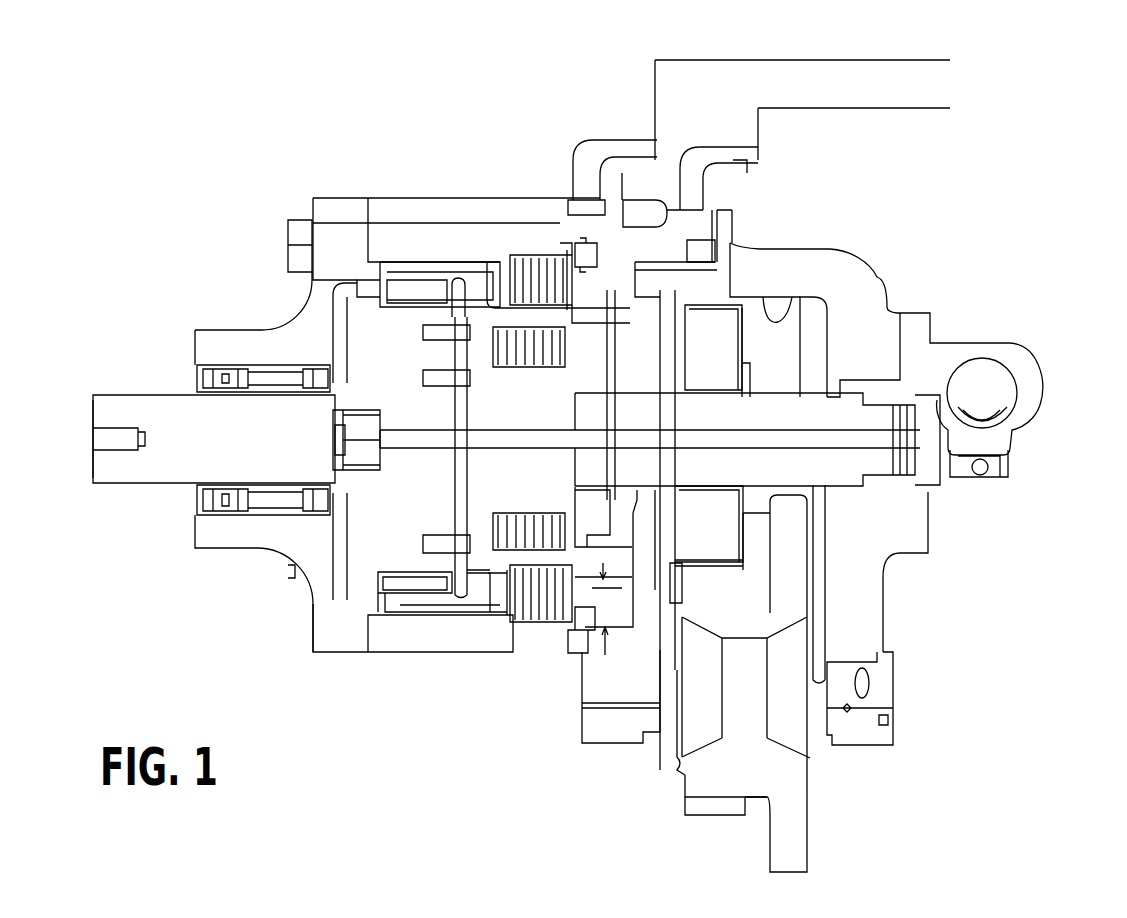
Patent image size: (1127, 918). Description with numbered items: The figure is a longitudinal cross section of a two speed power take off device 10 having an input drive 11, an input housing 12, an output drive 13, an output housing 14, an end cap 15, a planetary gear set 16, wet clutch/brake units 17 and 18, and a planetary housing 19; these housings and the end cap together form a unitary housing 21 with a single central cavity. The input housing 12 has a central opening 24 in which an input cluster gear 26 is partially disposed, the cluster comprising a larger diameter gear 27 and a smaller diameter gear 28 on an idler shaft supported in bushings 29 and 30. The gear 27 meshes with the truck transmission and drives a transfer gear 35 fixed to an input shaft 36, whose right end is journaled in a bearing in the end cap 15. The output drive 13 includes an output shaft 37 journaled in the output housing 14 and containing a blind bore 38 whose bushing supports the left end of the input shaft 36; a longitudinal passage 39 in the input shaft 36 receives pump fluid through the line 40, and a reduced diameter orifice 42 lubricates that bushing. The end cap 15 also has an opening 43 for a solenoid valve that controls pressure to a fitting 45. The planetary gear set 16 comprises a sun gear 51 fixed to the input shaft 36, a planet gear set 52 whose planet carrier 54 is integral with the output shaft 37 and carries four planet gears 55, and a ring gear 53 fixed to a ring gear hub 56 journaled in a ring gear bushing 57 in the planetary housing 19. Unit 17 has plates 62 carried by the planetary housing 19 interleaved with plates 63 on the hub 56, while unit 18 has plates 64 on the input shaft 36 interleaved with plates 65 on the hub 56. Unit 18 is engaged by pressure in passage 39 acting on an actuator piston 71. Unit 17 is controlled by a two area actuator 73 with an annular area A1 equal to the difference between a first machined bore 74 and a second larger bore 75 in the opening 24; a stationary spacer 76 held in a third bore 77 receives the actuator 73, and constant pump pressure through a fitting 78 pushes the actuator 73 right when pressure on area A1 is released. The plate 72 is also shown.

The power take off device 10 is at (338, 184).
The input drive 11 is at (752, 380).
The input housing 12 is at (883, 293).
The output drive 13 is at (148, 392).
The output housing 14 is at (237, 343).
The end cap 15 is at (920, 537).
The planetary gear set 16 is at (347, 583).
The planetary gear set wet clutch/brake unit 17 is at (528, 255).
The planetary gear set wet clutch unit 18 is at (505, 328).
The planetary housing 19 is at (378, 198).
The unitary housing 21 is at (737, 220).
The central opening 24 is at (780, 320).
The input cluster gear 26 is at (693, 777).
The larger diameter gear 27 is at (710, 820).
The smaller diameter gear 28 is at (807, 850).
The idler shaft support bushing 29 is at (648, 703).
The idler shaft support bushing 30 is at (870, 698).
The transfer gear 35 is at (731, 358).
The input shaft 36 is at (731, 423).
The output shaft 37 is at (222, 451).
The blind bore 38 is at (340, 397).
The longitudinal passage 39 is at (783, 437).
The line 40 is at (798, 58).
The reduced diameter orifice 42 is at (368, 445).
The opening 43 is at (1010, 380).
The fitting 45 is at (700, 152).
The sun gear 51 is at (420, 388).
The planet gear set 52 is at (370, 300).
The ring gear 53 is at (413, 590).
The planet carrier 54 is at (404, 347).
The planet gear 55 is at (408, 293).
The ring gear hub 56 is at (473, 602).
The ring gear bushing 57 is at (440, 617).
The first set of plates 62 is at (557, 255).
The second set of plates 63 is at (562, 250).
The first set of plates 64 is at (493, 510).
The second set of plates 65 is at (503, 600).
The actuator piston 71 is at (583, 590).
The clutch plate 72 is at (625, 588).
The two area actuator 73 is at (618, 300).
The first machined bore 74 is at (640, 585).
The second larger diameter stepped machined bore 75 is at (606, 655).
The stationary spacer 76 is at (598, 258).
The third larger diameter stepped machined bore 77 is at (585, 640).
The fitting 78 is at (600, 148).
The annular lateral cross sectional area A1 is at (605, 660).